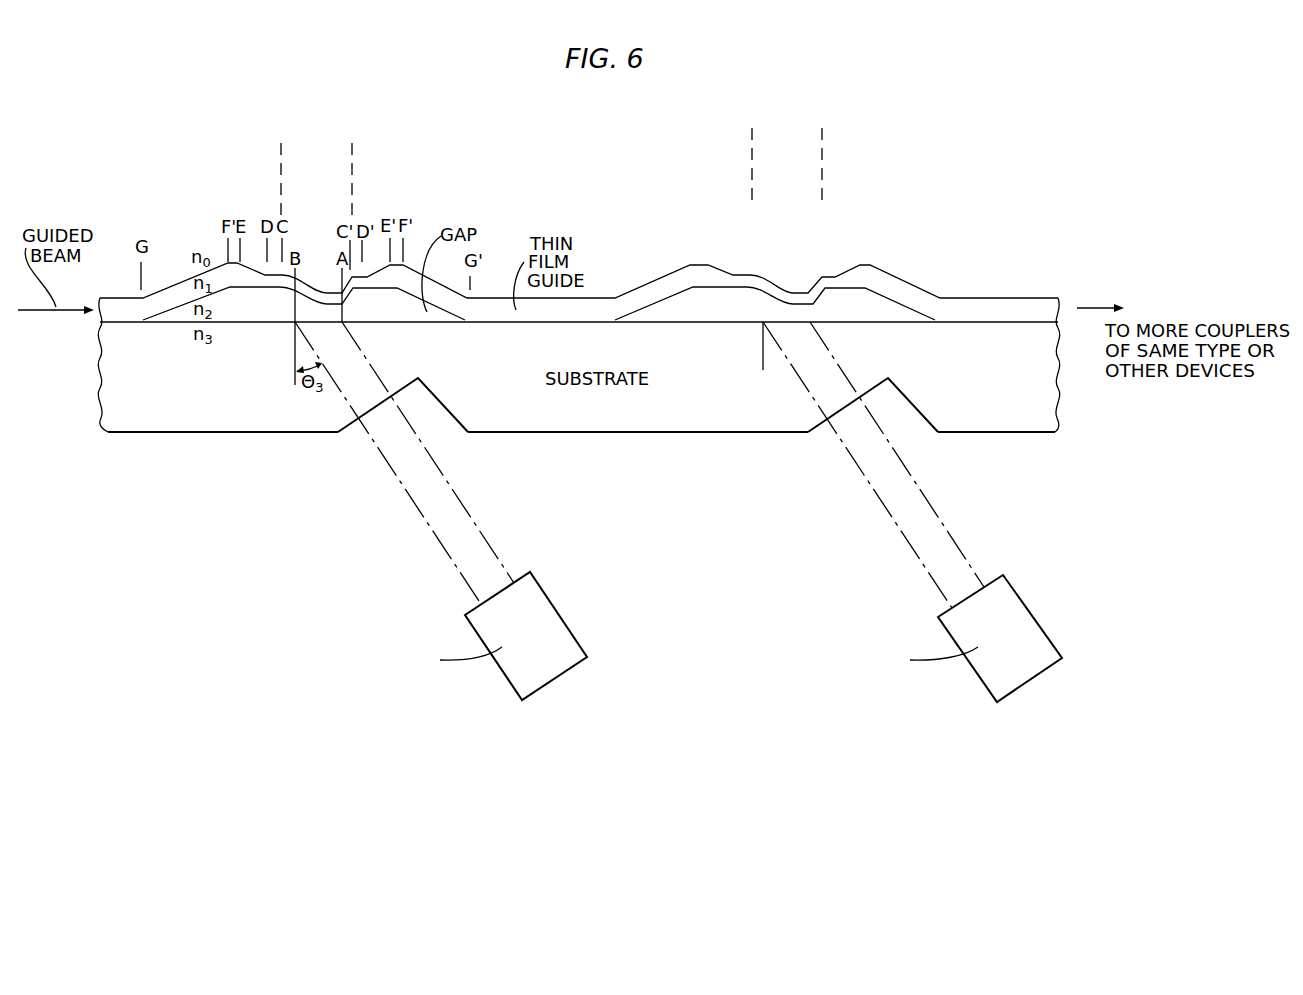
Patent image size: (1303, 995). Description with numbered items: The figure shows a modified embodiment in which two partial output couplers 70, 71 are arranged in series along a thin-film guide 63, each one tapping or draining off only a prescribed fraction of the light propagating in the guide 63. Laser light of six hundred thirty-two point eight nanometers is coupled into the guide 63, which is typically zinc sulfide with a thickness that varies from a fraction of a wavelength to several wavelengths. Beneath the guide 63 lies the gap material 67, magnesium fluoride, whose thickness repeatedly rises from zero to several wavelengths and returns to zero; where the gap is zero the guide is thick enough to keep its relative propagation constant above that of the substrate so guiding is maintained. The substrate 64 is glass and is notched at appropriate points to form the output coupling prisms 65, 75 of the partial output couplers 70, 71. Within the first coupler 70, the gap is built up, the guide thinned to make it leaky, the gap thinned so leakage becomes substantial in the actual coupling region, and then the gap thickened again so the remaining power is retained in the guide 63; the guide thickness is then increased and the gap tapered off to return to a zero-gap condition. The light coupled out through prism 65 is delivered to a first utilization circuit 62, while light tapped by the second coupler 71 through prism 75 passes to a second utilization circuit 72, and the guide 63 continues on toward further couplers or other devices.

The utilization circuit 1 62 is at (552, 613).
The guide 63 is at (170, 300).
The substrate 64 is at (232, 417).
The output coupling prism 65 is at (363, 428).
The gap material 67 is at (403, 307).
The partial output coupler 70 is at (323, 150).
The partial output coupler 71 is at (788, 142).
The utilization circuit 2 72 is at (1020, 613).
The output coupling prism 75 is at (827, 425).